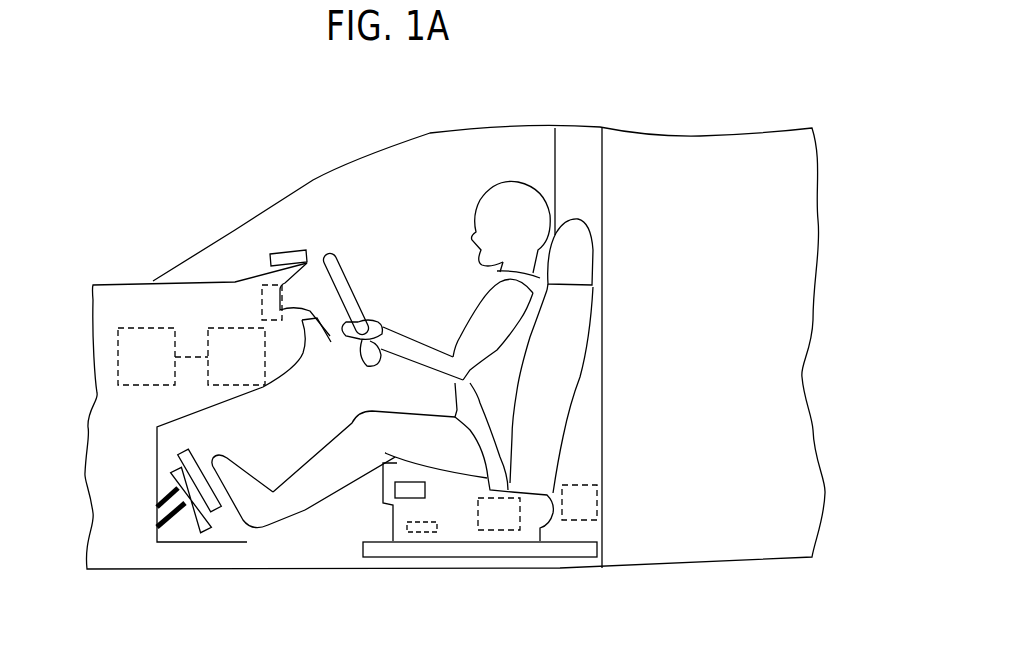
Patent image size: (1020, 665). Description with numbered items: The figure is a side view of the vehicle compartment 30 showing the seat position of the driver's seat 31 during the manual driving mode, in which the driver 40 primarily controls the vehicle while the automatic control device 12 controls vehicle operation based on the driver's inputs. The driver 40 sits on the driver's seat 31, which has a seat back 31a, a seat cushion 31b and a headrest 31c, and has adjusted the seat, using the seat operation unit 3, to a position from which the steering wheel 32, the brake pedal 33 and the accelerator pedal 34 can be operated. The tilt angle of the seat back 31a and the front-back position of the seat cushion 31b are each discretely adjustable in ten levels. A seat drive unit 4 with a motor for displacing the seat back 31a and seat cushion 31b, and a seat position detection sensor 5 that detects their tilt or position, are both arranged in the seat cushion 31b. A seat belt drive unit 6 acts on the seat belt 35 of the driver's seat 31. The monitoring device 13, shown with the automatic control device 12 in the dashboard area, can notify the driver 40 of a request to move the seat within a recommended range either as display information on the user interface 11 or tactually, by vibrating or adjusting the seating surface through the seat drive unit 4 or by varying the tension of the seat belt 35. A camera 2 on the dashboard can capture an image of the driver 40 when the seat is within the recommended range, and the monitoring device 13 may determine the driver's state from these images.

The camera 2 is at (290, 252).
The seat operation unit 3 is at (395, 490).
The seat drive unit 4 is at (497, 520).
The seat position detection sensor 5 is at (420, 533).
The seat belt drive unit 6 is at (593, 502).
The user interface 11 is at (265, 285).
The automatic control device 12 is at (141, 340).
The monitoring device 13 is at (232, 340).
The vehicle compartment 30 is at (658, 152).
The driver's seat 31 is at (529, 432).
The seat back 31a is at (562, 357).
The seat cushion 31b is at (528, 517).
The headrest 31c is at (577, 252).
The steering wheel 32 is at (343, 264).
The brake pedal 33 is at (200, 522).
The accelerator pedal 34 is at (193, 464).
The seat belt 35 is at (487, 447).
The driver 40 is at (512, 192).